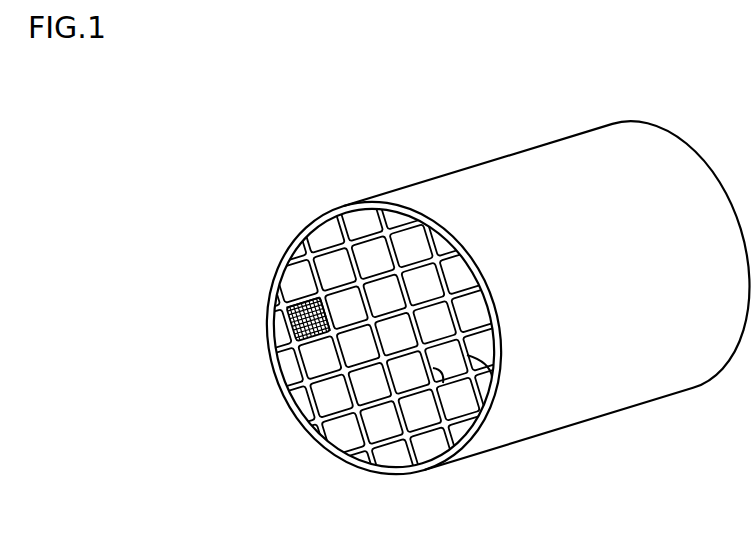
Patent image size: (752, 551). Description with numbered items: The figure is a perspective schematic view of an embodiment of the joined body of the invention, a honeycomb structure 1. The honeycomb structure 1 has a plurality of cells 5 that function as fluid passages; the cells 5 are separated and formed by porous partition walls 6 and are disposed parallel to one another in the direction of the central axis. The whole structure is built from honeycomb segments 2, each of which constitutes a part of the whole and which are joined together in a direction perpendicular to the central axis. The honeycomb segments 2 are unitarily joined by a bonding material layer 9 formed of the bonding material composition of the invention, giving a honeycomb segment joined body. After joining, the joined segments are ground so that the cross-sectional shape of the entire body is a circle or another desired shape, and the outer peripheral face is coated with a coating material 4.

The honeycomb structure 1 is at (479, 145).
The honeycomb segment 2 is at (318, 364).
The coating material 4 is at (278, 332).
The cell 5 is at (300, 294).
The porous partition wall 6 is at (297, 298).
The bonding material layer 9 is at (492, 377).